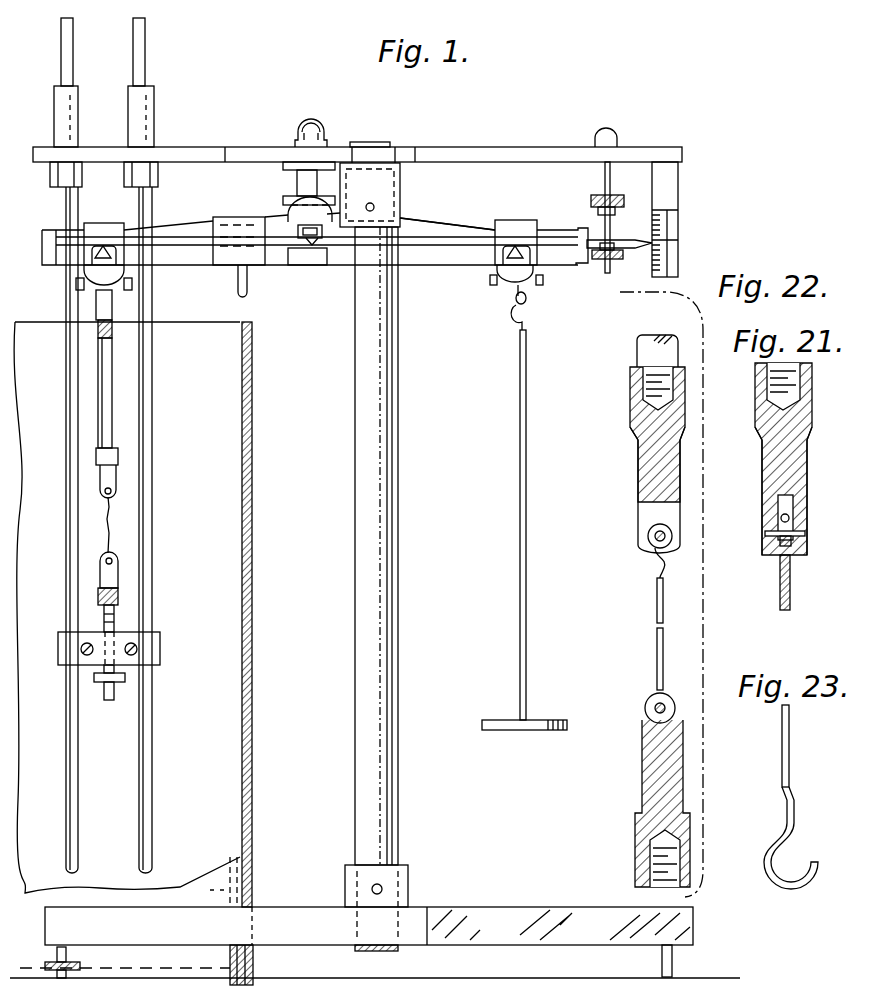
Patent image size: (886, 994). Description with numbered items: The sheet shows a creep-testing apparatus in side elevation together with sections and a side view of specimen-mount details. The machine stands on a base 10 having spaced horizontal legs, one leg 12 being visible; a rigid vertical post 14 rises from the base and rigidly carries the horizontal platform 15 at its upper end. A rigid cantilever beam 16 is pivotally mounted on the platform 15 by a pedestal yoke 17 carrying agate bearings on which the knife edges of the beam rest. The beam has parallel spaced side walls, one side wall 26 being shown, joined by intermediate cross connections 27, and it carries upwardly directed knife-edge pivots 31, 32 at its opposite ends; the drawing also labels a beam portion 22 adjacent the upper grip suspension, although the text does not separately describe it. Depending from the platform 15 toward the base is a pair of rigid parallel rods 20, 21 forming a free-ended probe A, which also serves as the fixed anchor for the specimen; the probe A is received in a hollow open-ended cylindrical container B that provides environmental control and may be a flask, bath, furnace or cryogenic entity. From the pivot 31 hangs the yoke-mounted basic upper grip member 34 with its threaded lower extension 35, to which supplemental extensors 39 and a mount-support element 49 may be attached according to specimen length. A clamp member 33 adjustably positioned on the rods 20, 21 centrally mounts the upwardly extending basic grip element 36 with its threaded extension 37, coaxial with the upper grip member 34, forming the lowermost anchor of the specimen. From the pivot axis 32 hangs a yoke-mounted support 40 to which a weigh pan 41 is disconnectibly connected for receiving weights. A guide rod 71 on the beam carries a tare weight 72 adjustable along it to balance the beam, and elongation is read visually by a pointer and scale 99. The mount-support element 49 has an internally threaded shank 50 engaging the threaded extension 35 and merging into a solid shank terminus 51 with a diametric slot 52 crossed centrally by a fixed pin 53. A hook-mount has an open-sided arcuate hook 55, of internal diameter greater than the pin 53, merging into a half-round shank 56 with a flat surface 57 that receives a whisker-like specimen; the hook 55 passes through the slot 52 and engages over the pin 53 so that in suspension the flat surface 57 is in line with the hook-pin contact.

In FIG. 1, the base 10 is at (298, 918).
In FIG. 1, the horizontal leg 12 is at (182, 923).
In FIG. 1, the vertical post 14 is at (388, 769).
In FIG. 1, the horizontal platform 15 is at (502, 140).
In FIG. 1, the beam 16 is at (345, 256).
In FIG. 1, the pedestal yoke 17 is at (300, 183).
In FIG. 1, the depending rod 20 is at (66, 302).
In FIG. 1, the depending rod 21 is at (152, 302).
In FIG. 1, the cross arm 22 is at (43, 247).
In FIG. 1, the side wall 26 is at (445, 262).
In FIG. 1, the cross connection 27 is at (585, 262).
In FIG. 1, the upwardly directed pivot 31 is at (101, 247).
In FIG. 1, the upwardly directed pivot 32 is at (515, 250).
In FIG. 1, the clamp member 33 is at (150, 646).
In FIG. 1, the basic upper grip member 34 is at (114, 276).
In FIG. 1, the threaded lower extension 35 is at (112, 328).
In FIG. 1, the basic grip element 36 is at (104, 615).
In FIG. 1, the threaded extension 37 is at (118, 598).
In FIG. 1, the supplemental adaptor or extensor 39 is at (98, 405).
In FIG. 1, the yoke-mounted support 40 is at (511, 293).
In FIG. 1, the weigh pan 41 is at (528, 731).
In FIG. 1, the mount-support element 49 is at (112, 481).
In FIG. 22, the mount-support element 49 is at (642, 455).
In FIG. 21, the mount-support element 49 is at (762, 478).
In FIG. 22, the internally threaded shank 50 is at (630, 410).
In FIG. 21, the internally threaded shank 50 is at (757, 413).
In FIG. 22, the shank terminus 51 is at (640, 490).
In FIG. 21, the shank terminus 51 is at (762, 451).
In FIG. 22, the diametric slot 52 is at (645, 512).
In FIG. 21, the diametric slot 52 is at (763, 514).
In FIG. 22, the diametrically extending pin 53 is at (648, 556).
In FIG. 21, the diametrically extending pin 53 is at (765, 536).
In FIG. 22, the hook 55 is at (645, 546).
In FIG. 23, the hook 55 is at (770, 876).
In FIG. 22, the half-round shank 56 is at (657, 587).
In FIG. 23, the half-round shank 56 is at (783, 766).
In FIG. 21, the flat surface 57 is at (790, 603).
In FIG. 23, the flat surface 57 is at (790, 725).
In FIG. 1, the guide rod 71 is at (468, 237).
In FIG. 1, the weight 72 is at (216, 225).
In FIG. 1, the pointer and scale 99 is at (630, 243).
In FIG. 1, the probe A is at (195, 726).
In FIG. 1, the container B is at (290, 626).